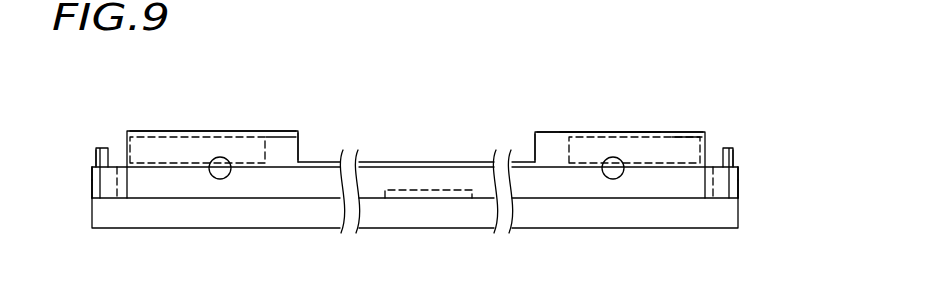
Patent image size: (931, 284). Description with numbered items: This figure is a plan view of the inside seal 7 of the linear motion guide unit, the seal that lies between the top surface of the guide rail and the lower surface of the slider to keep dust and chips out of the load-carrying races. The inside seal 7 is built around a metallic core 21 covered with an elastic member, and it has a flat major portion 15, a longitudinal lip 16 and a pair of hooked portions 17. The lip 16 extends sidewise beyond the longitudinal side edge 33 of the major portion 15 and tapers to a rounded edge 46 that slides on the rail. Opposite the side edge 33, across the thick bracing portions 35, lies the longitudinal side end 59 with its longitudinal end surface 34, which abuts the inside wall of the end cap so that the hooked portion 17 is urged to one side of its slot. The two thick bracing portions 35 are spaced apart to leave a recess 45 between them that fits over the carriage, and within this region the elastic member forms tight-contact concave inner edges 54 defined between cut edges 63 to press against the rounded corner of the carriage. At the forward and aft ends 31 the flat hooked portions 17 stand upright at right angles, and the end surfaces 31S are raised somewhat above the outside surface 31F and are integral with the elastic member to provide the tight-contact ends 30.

The inside seal 7 is at (637, 123).
The major portion 15 is at (250, 178).
The longitudinal lip 16 is at (403, 222).
The hooked portion 17 is at (105, 149).
The metallic core 21 is at (183, 147).
The tight-contact end 30 is at (92, 182).
The forward and aft ends 31 is at (93, 196).
The outside surface 31F is at (96, 158).
The end surface 31S is at (92, 172).
The longitudinal side edge 33 is at (563, 199).
The longitudinal end surface 34 is at (150, 130).
The thick bracing portion 35 is at (280, 143).
The recess 45 is at (320, 161).
The edge 46 is at (463, 228).
The concave inner edge 54 is at (465, 162).
The longitudinal side end 59 is at (212, 130).
The cut edge 63 is at (300, 150).